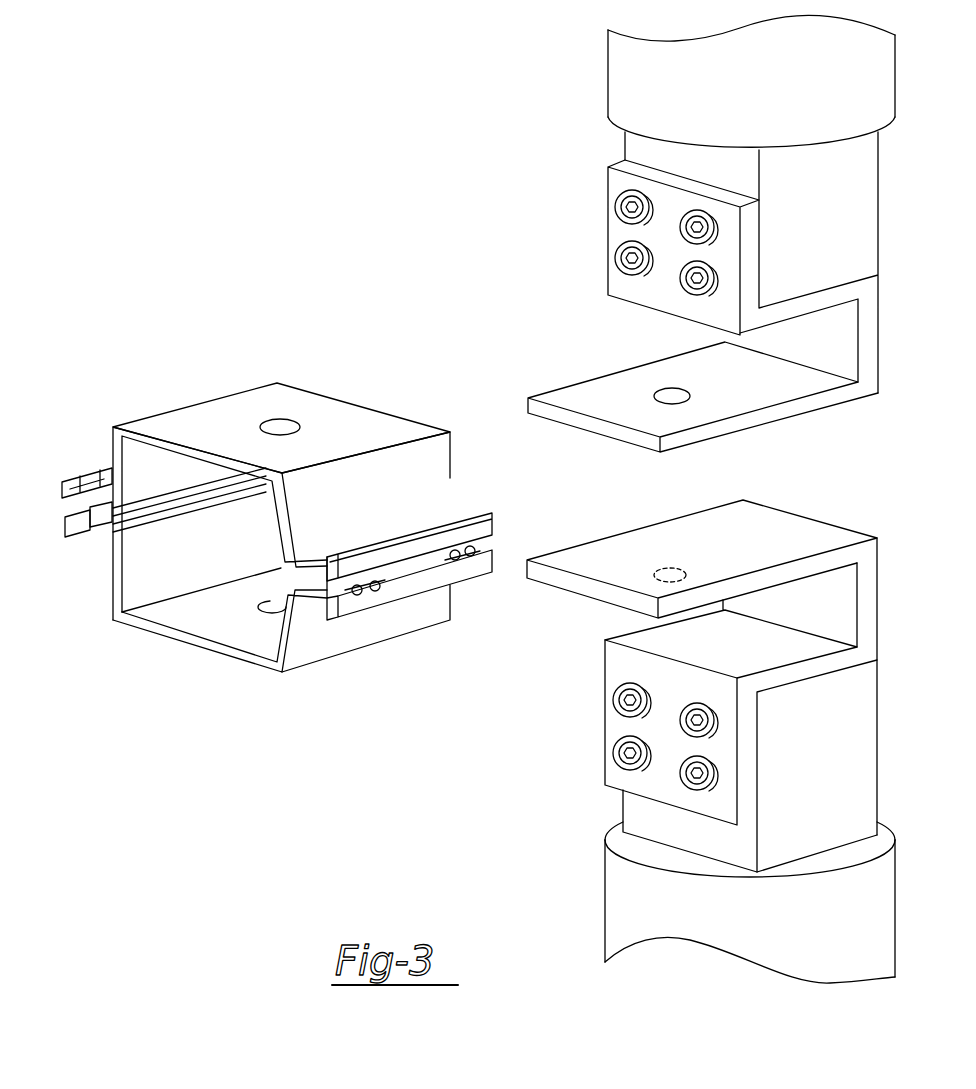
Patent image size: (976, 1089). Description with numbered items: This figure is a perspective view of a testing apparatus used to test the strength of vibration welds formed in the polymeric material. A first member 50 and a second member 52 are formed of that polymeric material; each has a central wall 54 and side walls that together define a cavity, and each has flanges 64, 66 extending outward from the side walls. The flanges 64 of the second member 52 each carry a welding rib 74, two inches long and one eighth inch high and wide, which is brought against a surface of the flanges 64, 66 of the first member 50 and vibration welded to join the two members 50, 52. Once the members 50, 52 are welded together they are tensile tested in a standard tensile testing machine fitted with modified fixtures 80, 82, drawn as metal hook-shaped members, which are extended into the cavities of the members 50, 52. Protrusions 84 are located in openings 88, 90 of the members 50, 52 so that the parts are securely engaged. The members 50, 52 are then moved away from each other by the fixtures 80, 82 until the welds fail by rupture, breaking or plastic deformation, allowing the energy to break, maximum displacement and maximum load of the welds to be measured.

The first member 50 is at (468, 486).
The second member 52 is at (177, 665).
The central wall 54 is at (322, 405).
The flange 64 is at (88, 518).
The flange 66 is at (108, 480).
The welding rib 74 is at (110, 544).
The fixture 80 is at (486, 395).
The fixture 82 is at (506, 590).
The protrusion 84 is at (669, 388).
The opening 88 is at (281, 418).
The opening 90 is at (271, 598).